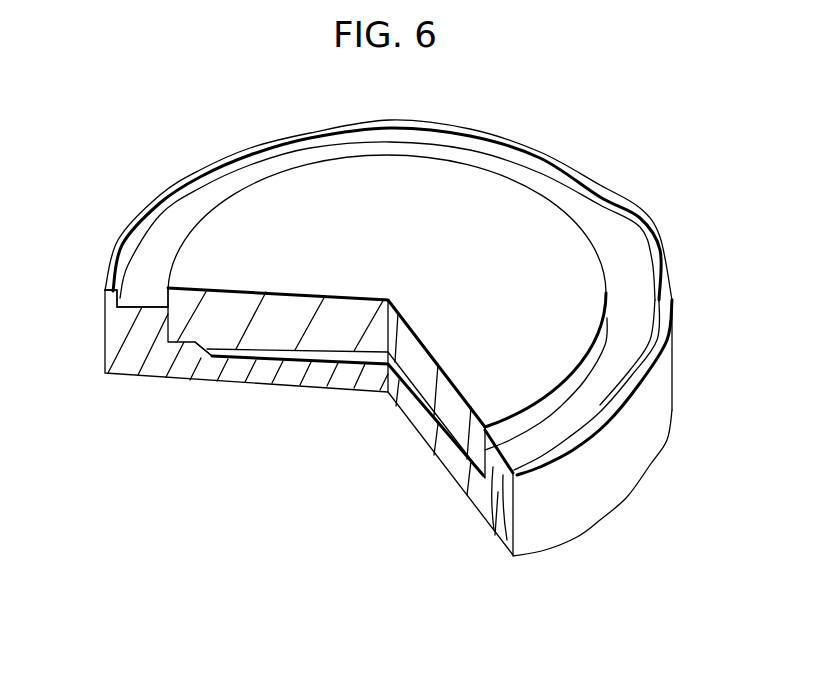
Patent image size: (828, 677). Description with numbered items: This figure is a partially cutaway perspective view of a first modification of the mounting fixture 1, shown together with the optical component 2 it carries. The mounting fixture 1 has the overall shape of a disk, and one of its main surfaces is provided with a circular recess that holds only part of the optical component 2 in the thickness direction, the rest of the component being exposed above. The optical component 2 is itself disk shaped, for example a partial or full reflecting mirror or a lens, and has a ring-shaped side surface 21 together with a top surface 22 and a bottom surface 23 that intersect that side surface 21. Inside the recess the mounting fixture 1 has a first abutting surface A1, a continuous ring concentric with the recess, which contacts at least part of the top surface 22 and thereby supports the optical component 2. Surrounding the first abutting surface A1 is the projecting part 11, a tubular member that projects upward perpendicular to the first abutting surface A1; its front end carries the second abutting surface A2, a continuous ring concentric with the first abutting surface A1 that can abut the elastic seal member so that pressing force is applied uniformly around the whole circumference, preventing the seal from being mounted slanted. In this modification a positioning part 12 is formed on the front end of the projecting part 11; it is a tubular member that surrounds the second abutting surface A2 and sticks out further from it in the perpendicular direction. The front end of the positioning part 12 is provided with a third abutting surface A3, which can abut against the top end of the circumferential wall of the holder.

The mounting fixture 1 is at (143, 190).
The optical component 2 is at (470, 238).
The projecting part 11 is at (498, 528).
The positioning part 12 is at (518, 511).
The side surface 21 is at (487, 437).
The top surface 22 is at (287, 360).
The bottom surface 23 is at (286, 294).
The first abutting surface A1 is at (176, 346).
The second abutting surface A2 is at (130, 308).
The third abutting surface A3 is at (104, 293).